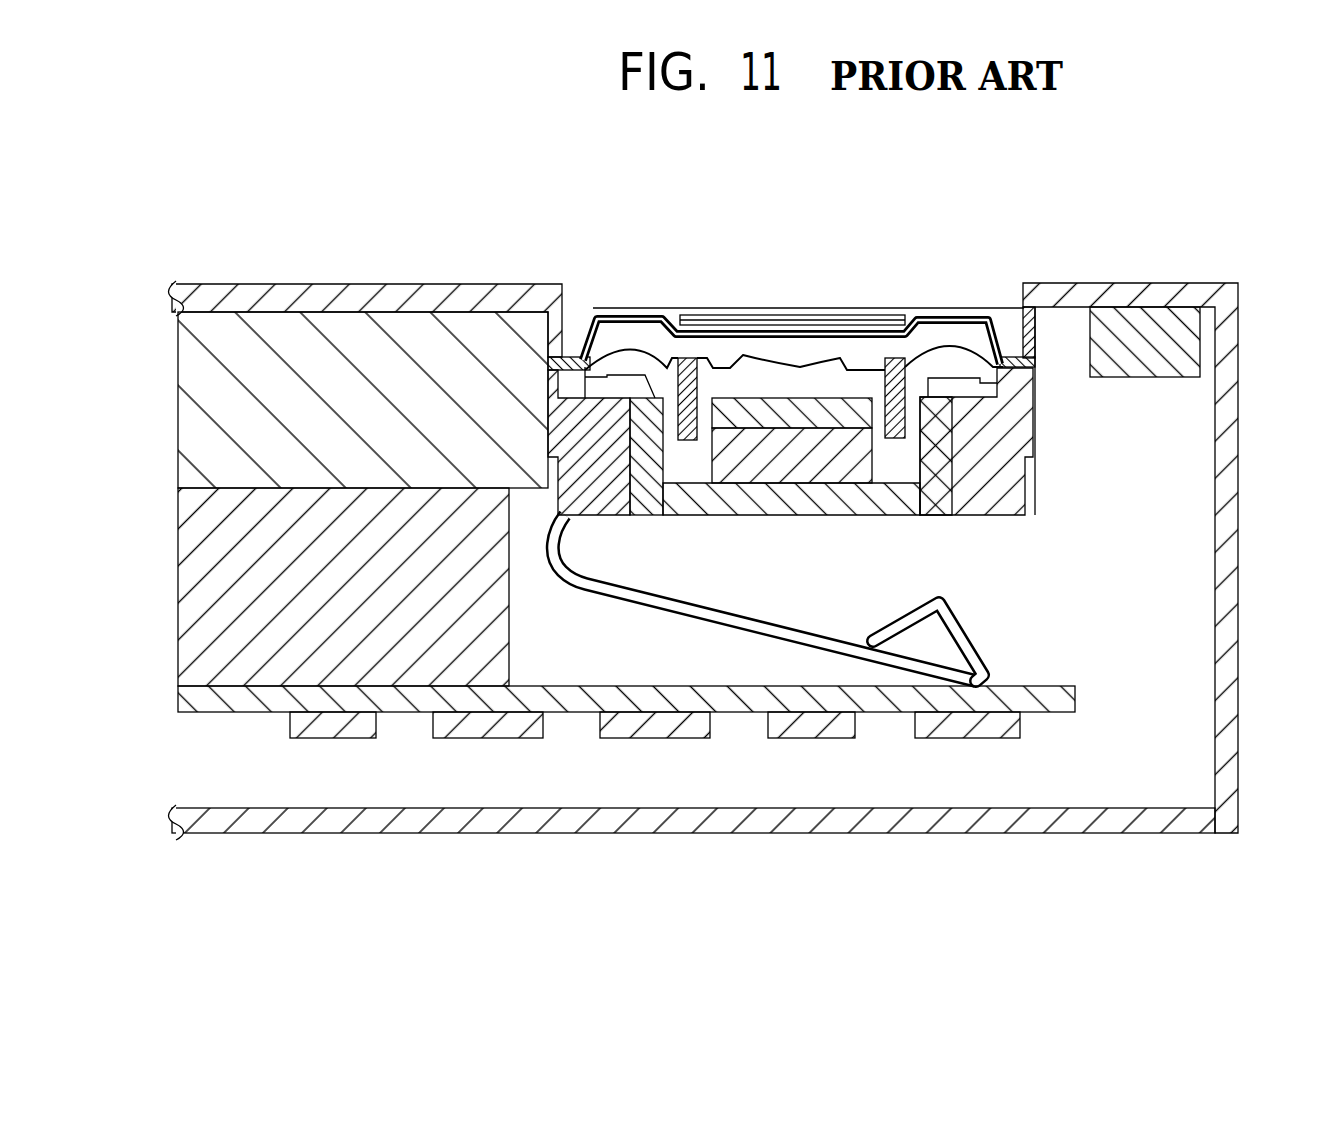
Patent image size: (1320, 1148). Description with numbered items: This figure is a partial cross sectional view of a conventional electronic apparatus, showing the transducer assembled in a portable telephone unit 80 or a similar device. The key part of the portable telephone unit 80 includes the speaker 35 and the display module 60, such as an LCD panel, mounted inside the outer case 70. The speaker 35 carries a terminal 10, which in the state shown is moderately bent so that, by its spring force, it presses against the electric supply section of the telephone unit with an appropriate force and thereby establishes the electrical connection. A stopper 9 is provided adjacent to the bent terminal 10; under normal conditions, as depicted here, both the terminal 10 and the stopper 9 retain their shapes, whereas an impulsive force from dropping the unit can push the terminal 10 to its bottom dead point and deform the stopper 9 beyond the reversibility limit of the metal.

The display module 60 is at (360, 328).
The portable telephone unit 80 is at (553, 270).
The speaker 35 is at (800, 286).
The outer case 70 is at (648, 824).
The terminal 10 is at (772, 627).
The stopper 9 is at (967, 637).